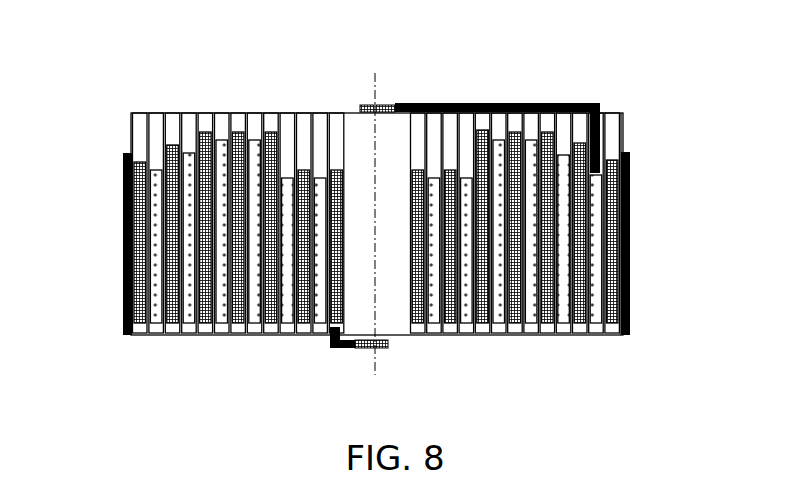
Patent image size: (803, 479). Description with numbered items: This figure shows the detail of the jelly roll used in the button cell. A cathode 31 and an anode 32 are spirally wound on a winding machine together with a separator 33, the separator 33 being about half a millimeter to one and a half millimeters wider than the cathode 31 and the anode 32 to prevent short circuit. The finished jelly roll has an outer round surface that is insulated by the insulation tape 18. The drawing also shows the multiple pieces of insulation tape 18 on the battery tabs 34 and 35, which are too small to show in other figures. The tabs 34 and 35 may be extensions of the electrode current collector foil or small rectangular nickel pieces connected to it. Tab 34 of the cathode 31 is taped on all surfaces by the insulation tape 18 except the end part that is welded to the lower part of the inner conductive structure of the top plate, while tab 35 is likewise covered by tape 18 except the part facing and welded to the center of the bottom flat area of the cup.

The insulation tape 18 is at (533, 103).
The cathode 31 is at (628, 157).
The anode 32 is at (629, 217).
The separator 33 is at (629, 295).
The battery tab 34 is at (375, 105).
The battery tab 35 is at (370, 348).